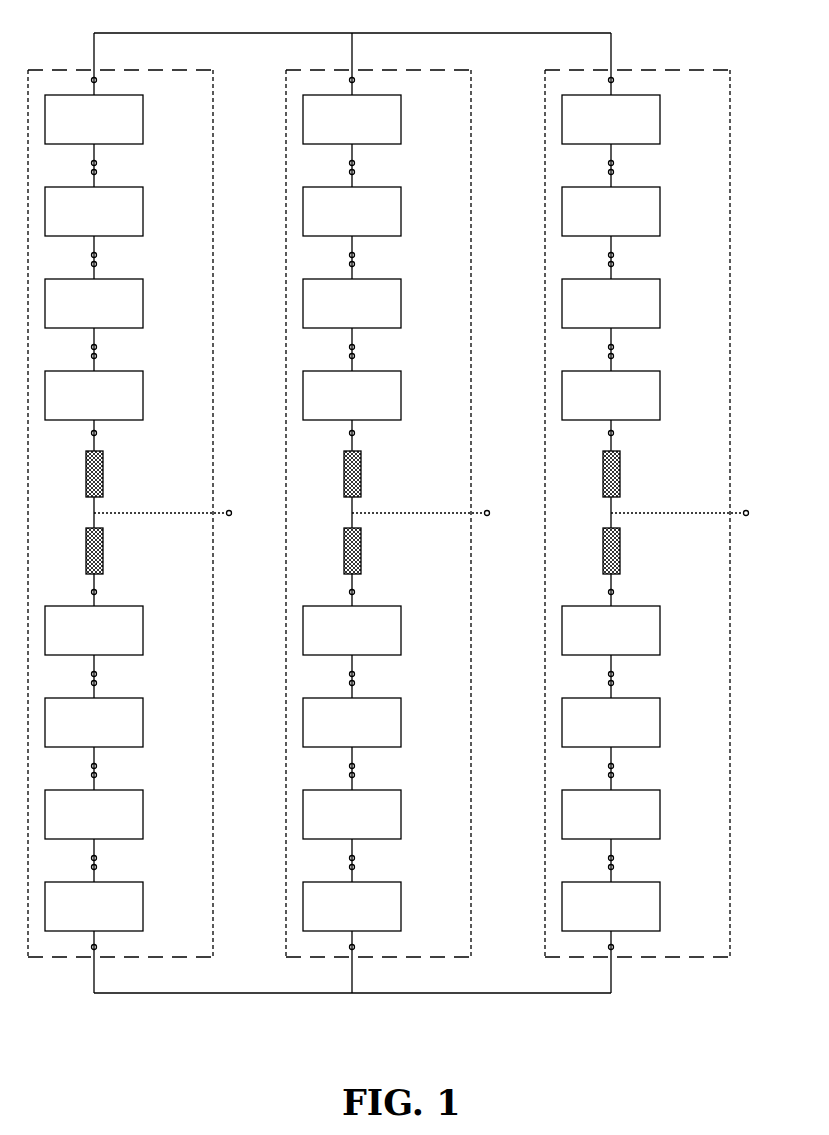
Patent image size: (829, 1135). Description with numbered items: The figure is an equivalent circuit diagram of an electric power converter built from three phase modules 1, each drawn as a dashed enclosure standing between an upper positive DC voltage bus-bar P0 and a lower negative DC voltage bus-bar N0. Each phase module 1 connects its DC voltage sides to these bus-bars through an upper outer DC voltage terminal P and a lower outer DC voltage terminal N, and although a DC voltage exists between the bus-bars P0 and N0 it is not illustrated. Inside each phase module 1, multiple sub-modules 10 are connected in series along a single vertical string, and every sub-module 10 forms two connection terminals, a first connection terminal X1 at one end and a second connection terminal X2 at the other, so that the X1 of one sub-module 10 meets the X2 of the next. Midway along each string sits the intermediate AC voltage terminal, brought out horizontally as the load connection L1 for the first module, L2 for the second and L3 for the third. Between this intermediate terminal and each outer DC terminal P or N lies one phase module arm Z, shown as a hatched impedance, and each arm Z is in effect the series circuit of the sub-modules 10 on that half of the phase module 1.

The phase module 1 is at (213, 248).
The sub-module 10 is at (168, 895).
The phase module arm Z is at (127, 540).
The first connection terminal X1 is at (91, 946).
The second connection terminal X2 is at (97, 867).
The first tap line L1 is at (174, 513).
The second tap line L2 is at (432, 513).
The third tap line L3 is at (691, 513).
The positive terminal P is at (351, 53).
The negative terminal N is at (351, 973).
The positive DC voltage bus-bar P0 is at (218, 33).
The negative DC voltage bus-bar N0 is at (218, 993).